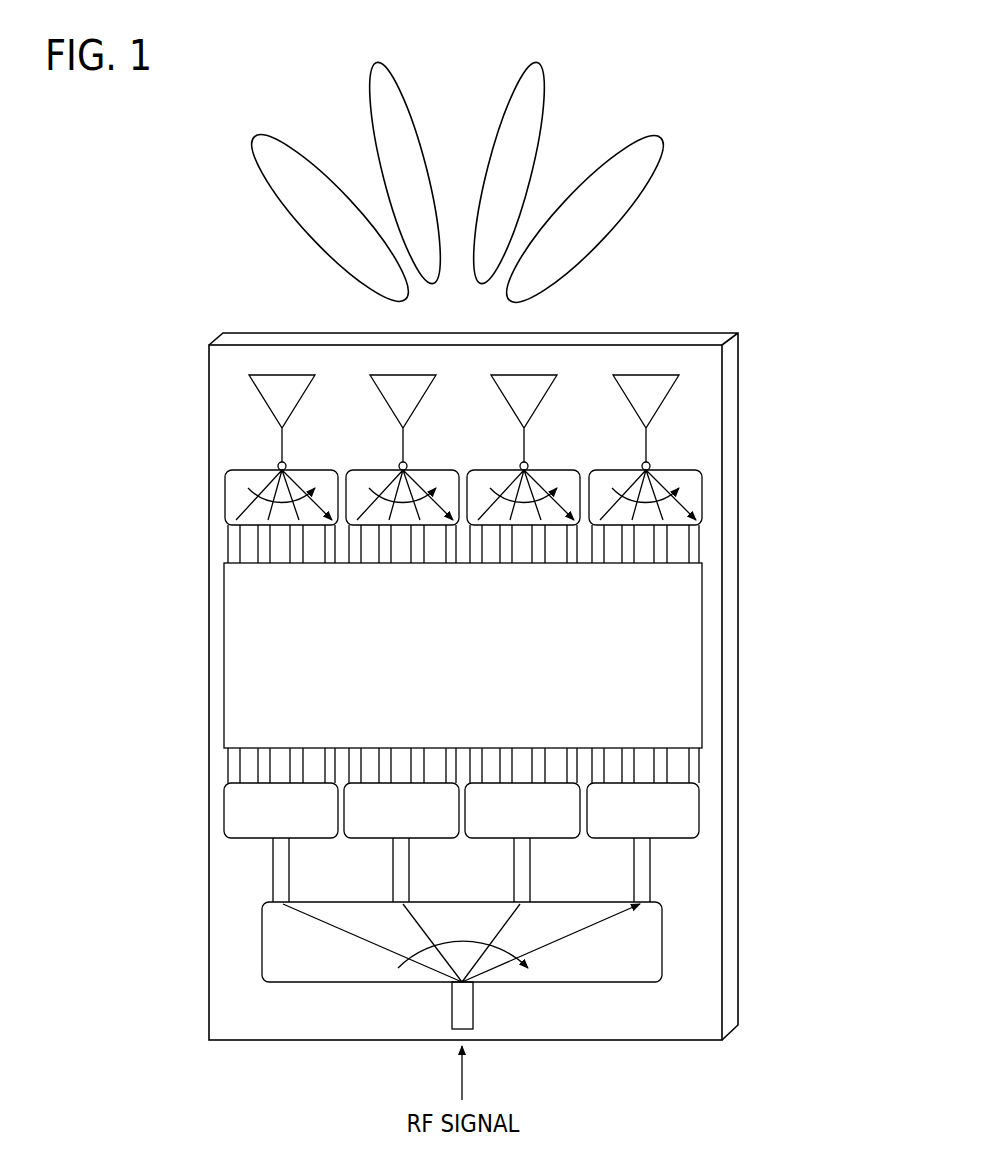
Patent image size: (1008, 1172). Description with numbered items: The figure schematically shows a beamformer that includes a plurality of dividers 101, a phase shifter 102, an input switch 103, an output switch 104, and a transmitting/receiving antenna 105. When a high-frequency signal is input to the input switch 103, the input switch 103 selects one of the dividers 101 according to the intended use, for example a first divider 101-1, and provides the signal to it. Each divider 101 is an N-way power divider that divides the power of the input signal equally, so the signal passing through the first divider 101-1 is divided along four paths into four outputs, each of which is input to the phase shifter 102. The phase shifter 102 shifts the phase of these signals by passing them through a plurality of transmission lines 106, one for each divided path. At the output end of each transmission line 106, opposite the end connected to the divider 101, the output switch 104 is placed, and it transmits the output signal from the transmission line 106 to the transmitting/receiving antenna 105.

The divider 101 is at (456, 842).
The first divider 101-1 is at (228, 828).
The phase shifter 102 is at (683, 655).
The input switch 103 is at (645, 943).
The output switch 104 is at (693, 493).
The transmitting/receiving antenna 105 is at (657, 393).
The transmission line 106 is at (693, 547).